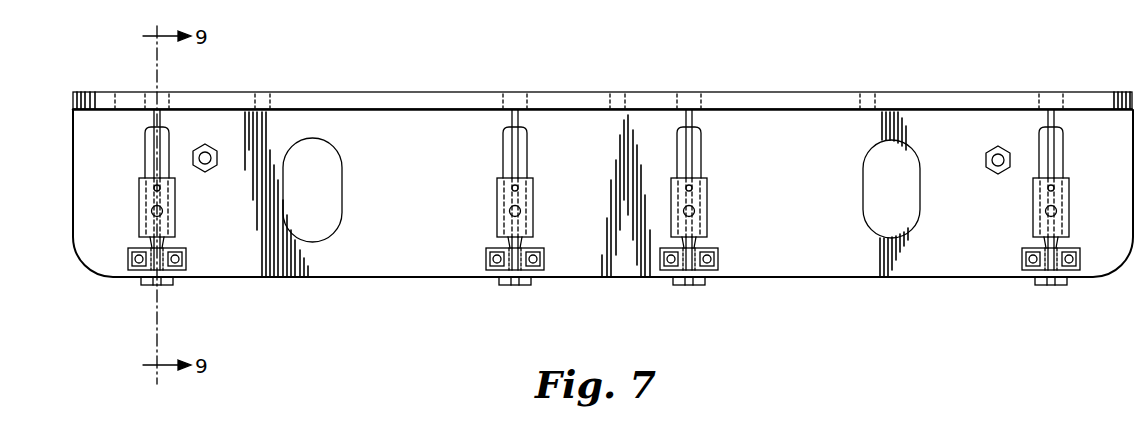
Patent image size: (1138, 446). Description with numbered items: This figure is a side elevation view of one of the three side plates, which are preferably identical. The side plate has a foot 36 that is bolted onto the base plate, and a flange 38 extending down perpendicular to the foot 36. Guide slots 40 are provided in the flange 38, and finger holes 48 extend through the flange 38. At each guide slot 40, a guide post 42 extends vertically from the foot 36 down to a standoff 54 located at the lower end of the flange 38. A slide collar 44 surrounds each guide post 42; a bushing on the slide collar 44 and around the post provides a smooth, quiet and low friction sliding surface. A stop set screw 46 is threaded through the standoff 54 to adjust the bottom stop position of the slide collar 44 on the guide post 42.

The foot 36 is at (331, 100).
The flange 38 is at (987, 255).
The guide slot 40 is at (697, 137).
The guide post 42 is at (518, 150).
The slide collar 44 is at (141, 197).
The stop set screw 46 is at (520, 285).
The finger hole 48 is at (866, 215).
The standoff 54 is at (187, 262).